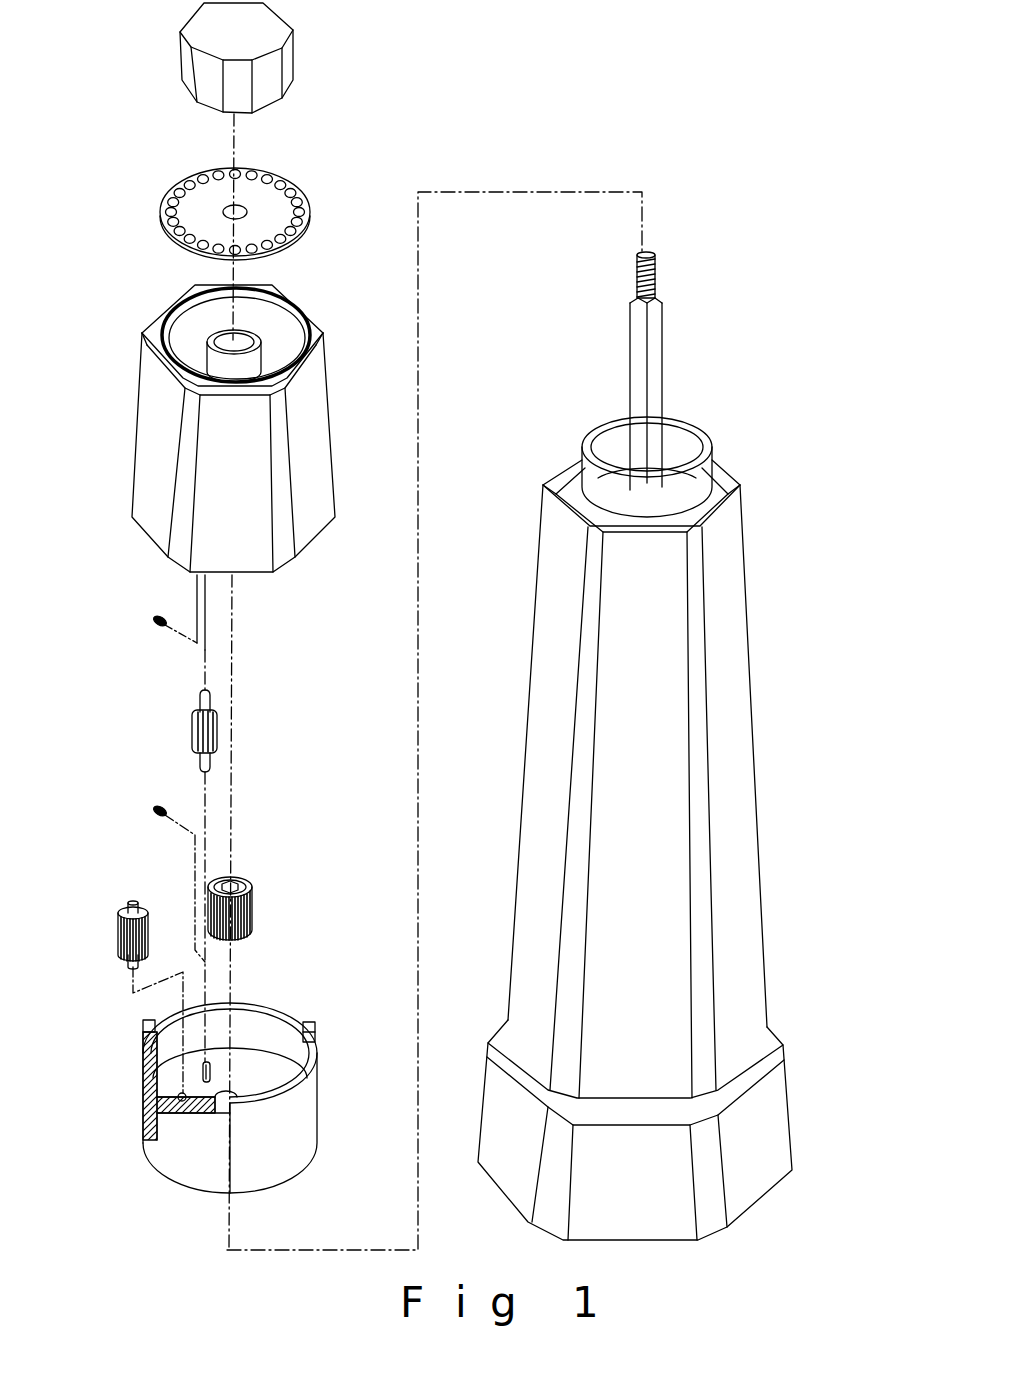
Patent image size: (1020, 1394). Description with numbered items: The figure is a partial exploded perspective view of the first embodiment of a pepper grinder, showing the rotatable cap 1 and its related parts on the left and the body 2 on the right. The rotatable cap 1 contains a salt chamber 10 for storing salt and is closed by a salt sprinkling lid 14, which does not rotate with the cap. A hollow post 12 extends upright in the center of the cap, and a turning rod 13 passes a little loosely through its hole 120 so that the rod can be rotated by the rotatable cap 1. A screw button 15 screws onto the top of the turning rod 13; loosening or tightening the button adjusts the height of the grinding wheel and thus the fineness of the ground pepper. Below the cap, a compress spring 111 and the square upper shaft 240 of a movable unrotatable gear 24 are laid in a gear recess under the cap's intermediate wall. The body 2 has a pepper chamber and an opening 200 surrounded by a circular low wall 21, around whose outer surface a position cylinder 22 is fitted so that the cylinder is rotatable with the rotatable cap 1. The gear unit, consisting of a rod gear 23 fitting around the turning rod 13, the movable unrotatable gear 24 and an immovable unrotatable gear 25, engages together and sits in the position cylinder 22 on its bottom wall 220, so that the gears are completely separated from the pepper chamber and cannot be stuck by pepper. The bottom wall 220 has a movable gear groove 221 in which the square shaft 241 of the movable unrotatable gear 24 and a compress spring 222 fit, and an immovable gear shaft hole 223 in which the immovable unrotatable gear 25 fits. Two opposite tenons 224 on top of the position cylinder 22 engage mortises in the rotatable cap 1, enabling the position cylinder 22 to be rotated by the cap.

The rotatable cap 1 is at (245, 412).
The salt chamber 10 is at (283, 342).
The hollow post 12 is at (228, 317).
The hole 120 is at (212, 335).
The turning rod 13 is at (655, 322).
The salt sprinkling lid 14 is at (270, 203).
The screw button 15 is at (292, 58).
The compress spring 111 is at (151, 617).
The body 2 is at (652, 746).
The opening 200 is at (675, 473).
The circular low wall 21 is at (694, 441).
The position cylinder 22 is at (229, 1071).
The bottom wall 220 is at (262, 1073).
The movable gear groove 221 is at (208, 1068).
The compress spring 222 is at (151, 807).
The immovable gear shaft hole 223 is at (182, 1101).
The tenons 224 is at (147, 1023).
The rod gear 23 is at (253, 900).
The movable unrotatable gear 24 is at (150, 736).
The square upper shaft 240 is at (200, 707).
The square shaft 241 is at (198, 765).
The immovable unrotatable gear 25 is at (118, 930).